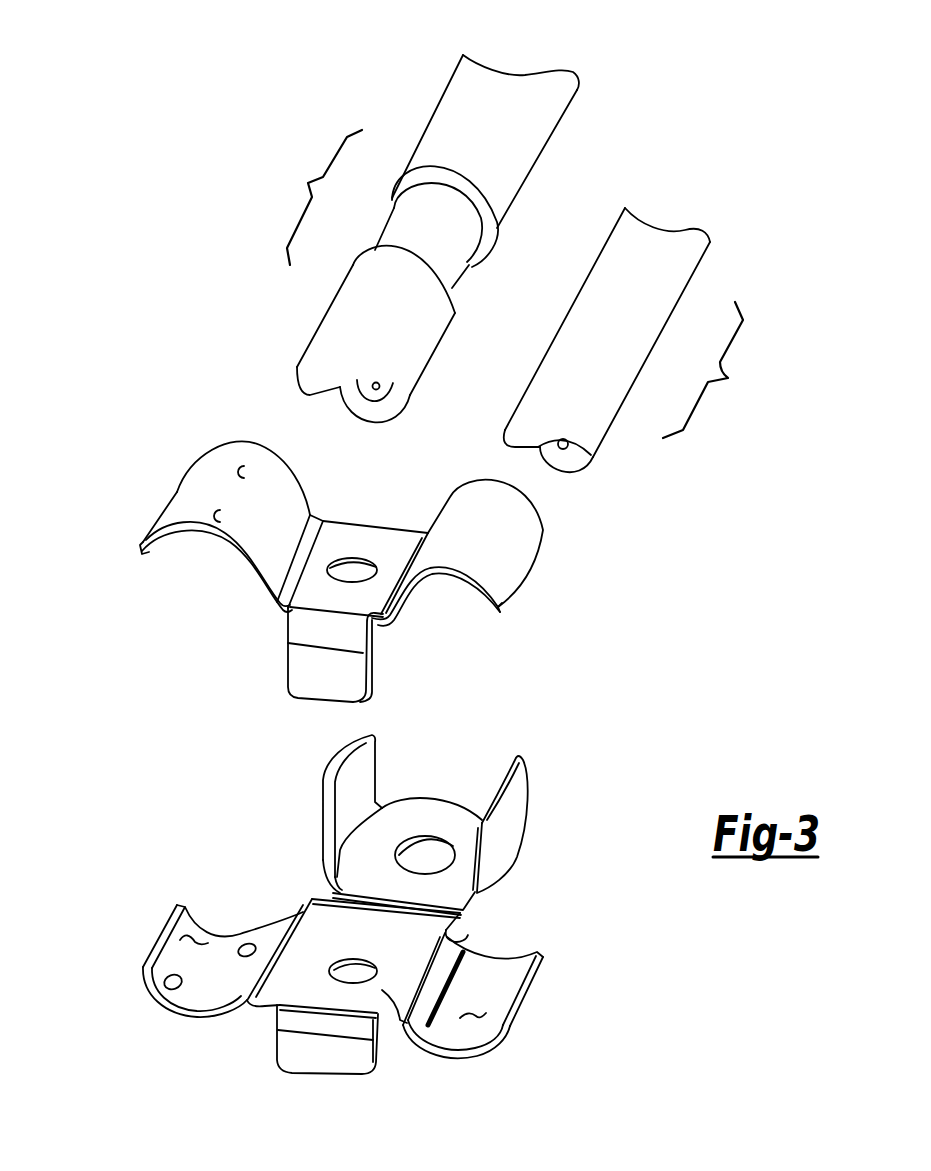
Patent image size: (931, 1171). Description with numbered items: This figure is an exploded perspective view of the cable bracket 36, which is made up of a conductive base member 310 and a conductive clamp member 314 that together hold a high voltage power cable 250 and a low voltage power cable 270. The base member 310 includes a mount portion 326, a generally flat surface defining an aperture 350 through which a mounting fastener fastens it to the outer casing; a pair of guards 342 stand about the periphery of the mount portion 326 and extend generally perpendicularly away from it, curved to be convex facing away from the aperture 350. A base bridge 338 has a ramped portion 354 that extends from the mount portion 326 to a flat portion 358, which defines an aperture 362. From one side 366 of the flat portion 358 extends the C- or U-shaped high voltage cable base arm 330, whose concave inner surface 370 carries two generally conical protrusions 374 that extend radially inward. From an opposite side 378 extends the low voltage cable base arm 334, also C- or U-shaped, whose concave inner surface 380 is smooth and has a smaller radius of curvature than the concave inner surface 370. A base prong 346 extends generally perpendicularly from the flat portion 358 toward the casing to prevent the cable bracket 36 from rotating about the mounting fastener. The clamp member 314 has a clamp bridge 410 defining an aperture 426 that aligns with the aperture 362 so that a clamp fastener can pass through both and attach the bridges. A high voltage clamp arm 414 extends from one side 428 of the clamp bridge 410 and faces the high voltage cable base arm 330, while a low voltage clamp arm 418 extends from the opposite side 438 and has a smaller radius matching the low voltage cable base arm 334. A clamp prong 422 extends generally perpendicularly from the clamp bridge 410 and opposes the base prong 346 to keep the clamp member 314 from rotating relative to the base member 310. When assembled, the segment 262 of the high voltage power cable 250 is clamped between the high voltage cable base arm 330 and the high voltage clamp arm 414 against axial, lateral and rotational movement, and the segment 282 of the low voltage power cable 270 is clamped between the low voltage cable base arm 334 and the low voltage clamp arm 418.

The cable bracket 36 is at (159, 293).
The high voltage power cable 250 is at (557, 88).
The segment 262 is at (315, 197).
The low voltage power cable 270 is at (680, 237).
The segment 282 is at (713, 370).
The clamp member 314 is at (131, 441).
The high voltage clamp arm 414 is at (222, 442).
The clamp bridge 410 is at (353, 527).
The aperture 426 is at (370, 558).
The side 428 is at (295, 578).
The low voltage clamp arm 418 is at (542, 545).
The side 438 is at (397, 597).
The clamp prong 422 is at (283, 677).
The base member 310 is at (145, 874).
The guards 342 is at (327, 765).
The mount portion 326 is at (457, 831).
The aperture 350 is at (454, 858).
The base bridge 338 is at (346, 925).
The aperture 362 is at (347, 960).
The ramped portion 354 is at (446, 930).
The flat portion 358 is at (385, 1020).
The base prong 346 is at (340, 1078).
The high voltage cable base arm 330 is at (189, 950).
The side 366 is at (268, 1006).
The concave inner surface 370 is at (195, 935).
The protrusions 374 is at (240, 943).
The low voltage cable base arm 334 is at (512, 1013).
The side 378 is at (430, 979).
The concave inner surface 380 is at (465, 1017).